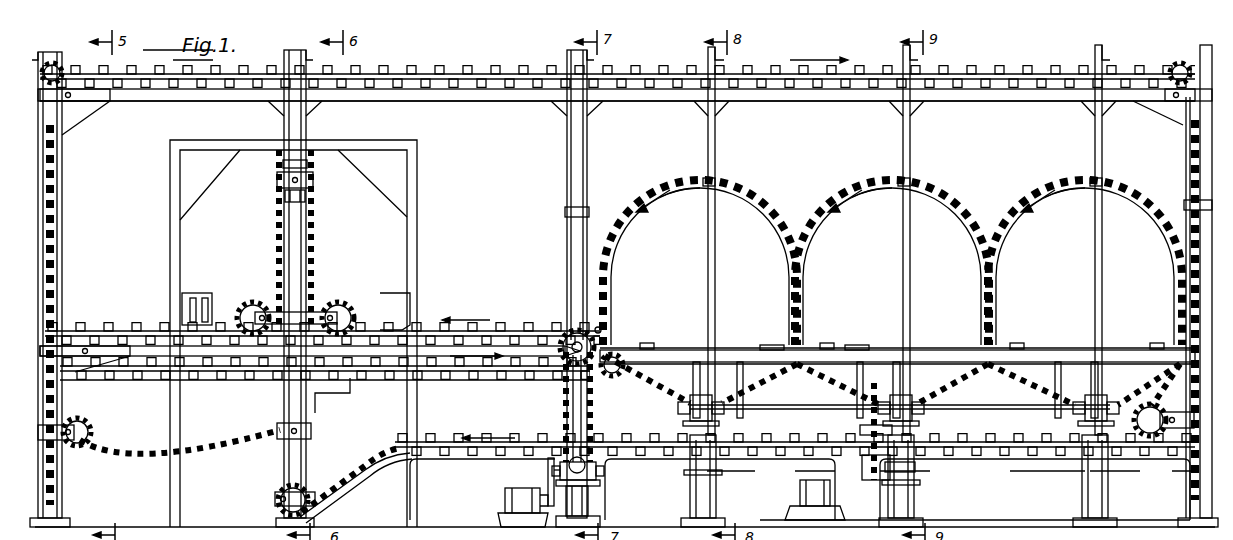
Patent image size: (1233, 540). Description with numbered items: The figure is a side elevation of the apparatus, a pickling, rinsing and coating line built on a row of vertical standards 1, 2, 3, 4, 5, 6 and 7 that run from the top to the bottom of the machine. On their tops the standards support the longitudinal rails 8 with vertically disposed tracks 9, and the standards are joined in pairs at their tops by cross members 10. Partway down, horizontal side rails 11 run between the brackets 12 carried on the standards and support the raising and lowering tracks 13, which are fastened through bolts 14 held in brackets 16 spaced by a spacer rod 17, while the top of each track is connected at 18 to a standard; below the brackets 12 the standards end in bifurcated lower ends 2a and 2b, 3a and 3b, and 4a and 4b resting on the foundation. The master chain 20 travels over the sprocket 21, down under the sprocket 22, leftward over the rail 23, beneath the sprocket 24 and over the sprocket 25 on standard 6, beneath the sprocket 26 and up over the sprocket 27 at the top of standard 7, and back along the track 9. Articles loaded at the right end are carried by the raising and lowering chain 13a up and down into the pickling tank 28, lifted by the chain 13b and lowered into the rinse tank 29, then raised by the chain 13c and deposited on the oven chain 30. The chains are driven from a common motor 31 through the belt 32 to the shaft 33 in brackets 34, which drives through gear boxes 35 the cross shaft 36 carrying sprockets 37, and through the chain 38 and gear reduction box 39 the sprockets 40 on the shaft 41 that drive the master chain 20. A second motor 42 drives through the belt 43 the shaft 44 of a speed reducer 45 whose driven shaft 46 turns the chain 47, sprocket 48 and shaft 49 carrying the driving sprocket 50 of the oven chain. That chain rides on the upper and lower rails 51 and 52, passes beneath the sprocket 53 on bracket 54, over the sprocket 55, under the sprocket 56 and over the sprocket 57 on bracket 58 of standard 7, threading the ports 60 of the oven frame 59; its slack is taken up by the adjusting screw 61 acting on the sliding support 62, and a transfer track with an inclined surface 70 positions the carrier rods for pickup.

The vertical standard 1 is at (1208, 175).
The vertical standard 2 is at (1102, 150).
The vertical standard 3 is at (910, 150).
The vertical standard 4 is at (715, 148).
The vertical standard 5 is at (587, 162).
The vertical standard 6 is at (306, 136).
The vertical standard 7 is at (62, 176).
The longitudinal rail 8 is at (1003, 100).
The track 9 is at (645, 101).
The cross member 10 is at (575, 52).
The horizontal side rail 11 is at (1112, 348).
The bracket 12 is at (690, 370).
The raising and lowering track 13 is at (752, 198).
The raising and lowering chain 13a is at (1150, 192).
The raising and lowering chain 13b is at (962, 200).
The raising and lowering chain 13c is at (748, 198).
The bolt 14 is at (647, 343).
The bracket 16 is at (768, 345).
The spacer rod 17 is at (735, 350).
The track connection 18 is at (706, 188).
The master chain 20 is at (1040, 66).
The sprocket 21 is at (1178, 66).
The sprocket 22 is at (1165, 412).
The rail 23 is at (1040, 476).
The sprocket 24 is at (272, 488).
The sprocket 25 is at (332, 397).
The sprocket 26 is at (90, 436).
The sprocket 27 is at (68, 72).
The pickling tank 28 is at (986, 510).
The rinse tank 29 is at (777, 510).
The oven chain 30 is at (568, 330).
The driving motor 31 is at (823, 512).
The belt 32 is at (848, 520).
The shaft 33 is at (795, 396).
The bracket 34 is at (866, 375).
The gear box 35 is at (688, 424).
The cross shaft 36 is at (680, 408).
The sprocket 37 is at (738, 400).
The chain 38 is at (864, 470).
The gear reduction box 39 is at (916, 480).
The sprocket 40 is at (982, 463).
The shaft 41 is at (872, 464).
The motor 42 is at (512, 500).
The belt 43 is at (548, 477).
The shaft 44 is at (604, 472).
The speed reducer 45 is at (600, 484).
The driven shaft 46 is at (590, 455).
The chain 47 is at (562, 424).
The sprocket 48 is at (564, 380).
The shaft 49 is at (604, 330).
The driving sprocket 50 is at (578, 330).
The upper rail 51 is at (495, 330).
The lower rail 52 is at (495, 372).
The sprocket 53 is at (345, 308).
The bracket 54 is at (325, 312).
The sprocket 55 is at (312, 176).
The sprocket 56 is at (252, 302).
The sprocket 57 is at (95, 340).
The bracket 58 is at (70, 340).
The oven frame 59 is at (417, 262).
The port 60 is at (182, 312).
The adjusting screw 61 is at (305, 196).
The sliding support 62 is at (277, 180).
The inclined surface 70 is at (611, 376).
The bifurcated lower end 2a is at (1108, 496).
The bifurcated lower end 2b is at (1082, 496).
The bifurcated lower end 3a is at (914, 501).
The bifurcated lower end 3b is at (888, 501).
The bifurcated lower end 4a is at (716, 496).
The bifurcated lower end 4b is at (690, 496).